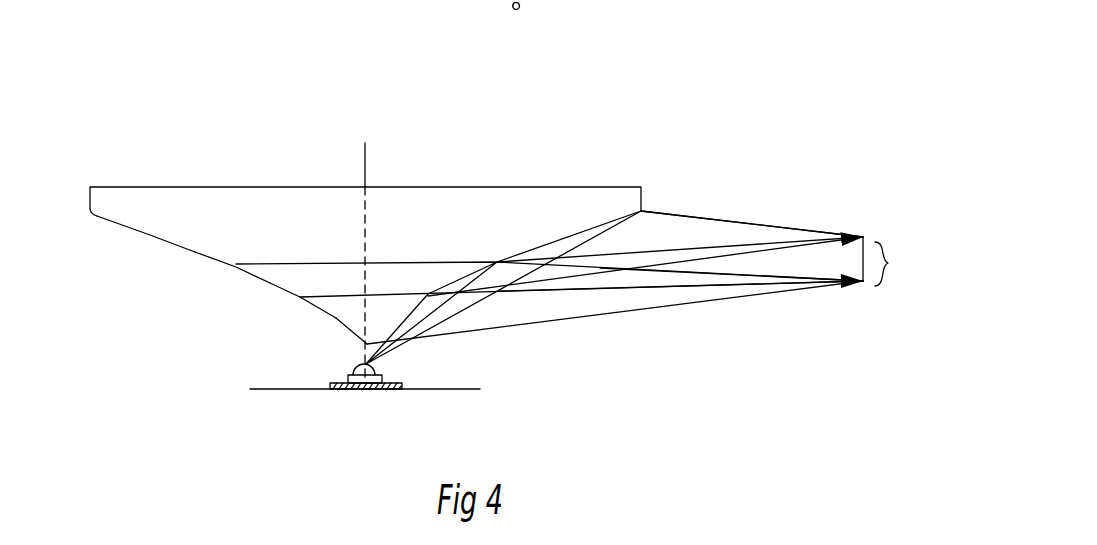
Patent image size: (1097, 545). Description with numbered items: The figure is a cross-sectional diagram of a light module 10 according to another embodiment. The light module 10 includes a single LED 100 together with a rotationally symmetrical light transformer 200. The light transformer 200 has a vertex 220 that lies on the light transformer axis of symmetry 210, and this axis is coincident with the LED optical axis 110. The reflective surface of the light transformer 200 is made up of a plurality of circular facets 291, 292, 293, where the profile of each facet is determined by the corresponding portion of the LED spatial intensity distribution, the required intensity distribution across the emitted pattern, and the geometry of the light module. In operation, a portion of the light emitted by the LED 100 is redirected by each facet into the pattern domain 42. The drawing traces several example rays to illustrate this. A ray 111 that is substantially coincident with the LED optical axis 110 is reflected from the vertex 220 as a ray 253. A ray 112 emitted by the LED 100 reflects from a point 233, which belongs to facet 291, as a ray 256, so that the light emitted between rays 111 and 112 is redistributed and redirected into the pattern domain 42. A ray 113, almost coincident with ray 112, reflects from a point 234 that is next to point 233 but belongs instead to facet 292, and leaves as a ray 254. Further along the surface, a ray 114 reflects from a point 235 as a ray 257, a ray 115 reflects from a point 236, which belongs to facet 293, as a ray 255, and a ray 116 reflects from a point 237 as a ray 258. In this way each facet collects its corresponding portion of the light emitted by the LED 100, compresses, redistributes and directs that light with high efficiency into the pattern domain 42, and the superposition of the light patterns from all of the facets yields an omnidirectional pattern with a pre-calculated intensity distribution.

The light module 10 is at (198, 144).
The pattern domain 42 is at (886, 261).
The LED 100 is at (346, 400).
The LED optical axis 110 is at (297, 365).
The ray 111 is at (354, 355).
The ray 112 is at (431, 321).
The ray 113 is at (414, 323).
The ray 114 is at (476, 332).
The ray 115 is at (456, 303).
The ray 116 is at (598, 237).
The light transformer 200 is at (355, 268).
The light transformer axis of symmetry 210 is at (361, 161).
The vertex 220 is at (355, 350).
The point 233 is at (581, 243).
The point 234 is at (428, 292).
The point 235 is at (549, 196).
The point 236 is at (499, 260).
The point 237 is at (644, 209).
The ray 253 is at (656, 308).
The ray 254 is at (698, 288).
The ray 255 is at (723, 276).
The ray 256 is at (684, 256).
The ray 257 is at (738, 242).
The ray 258 is at (795, 226).
The circular facet 291 is at (321, 316).
The circular facet 292 is at (257, 285).
The circular facet 293 is at (179, 250).